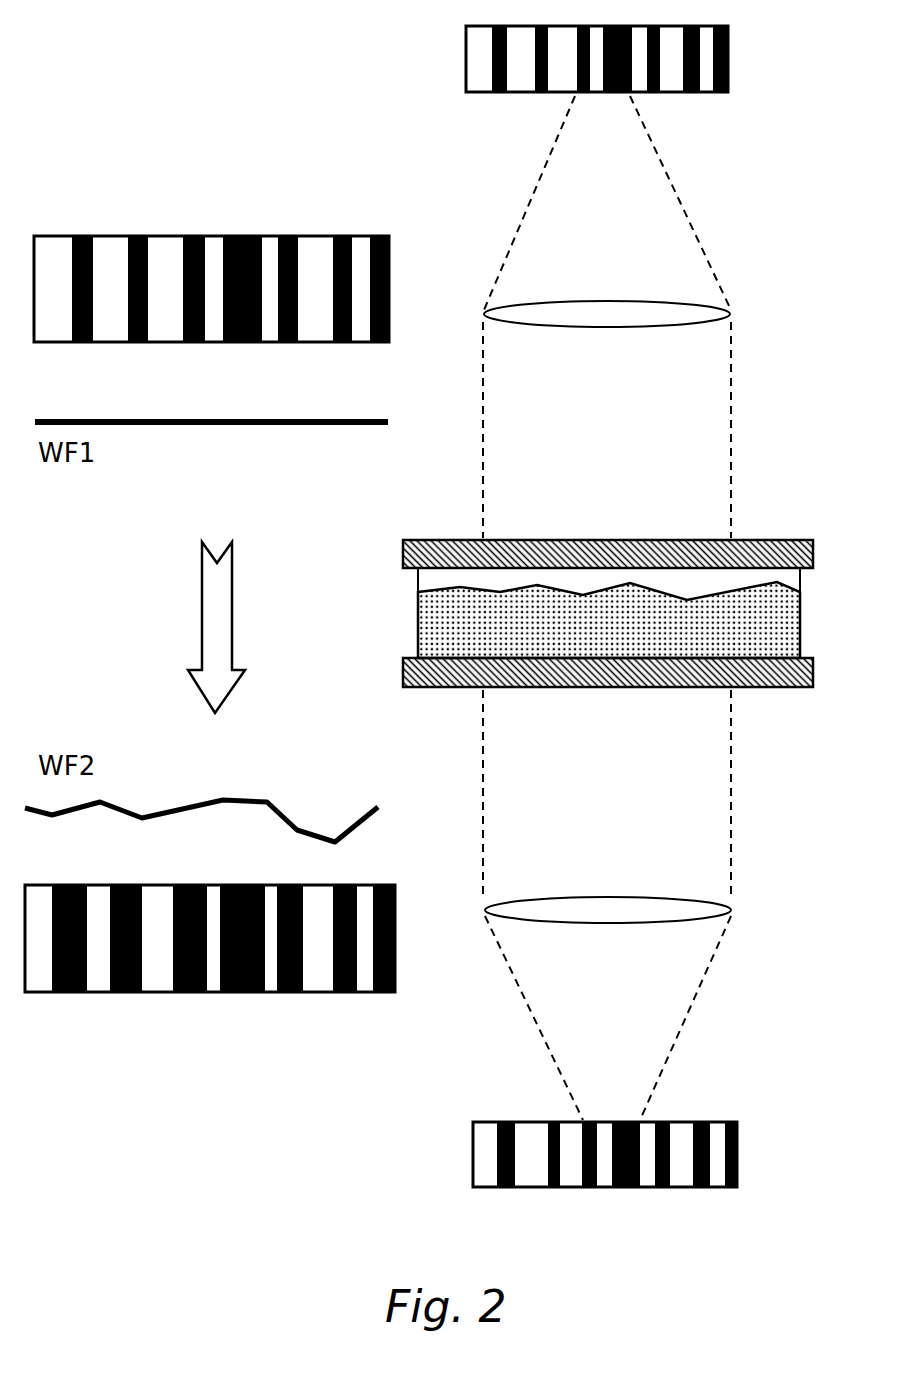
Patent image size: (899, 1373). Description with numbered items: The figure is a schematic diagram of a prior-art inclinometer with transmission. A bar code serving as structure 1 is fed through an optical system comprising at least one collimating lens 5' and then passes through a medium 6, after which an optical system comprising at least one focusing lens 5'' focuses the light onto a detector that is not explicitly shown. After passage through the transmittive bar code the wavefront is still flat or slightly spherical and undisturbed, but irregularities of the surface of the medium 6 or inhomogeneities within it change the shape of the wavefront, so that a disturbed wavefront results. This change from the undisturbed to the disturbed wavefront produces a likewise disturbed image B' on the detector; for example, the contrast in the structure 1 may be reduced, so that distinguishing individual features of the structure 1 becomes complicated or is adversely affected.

The structure 1 is at (381, 184).
The collimating lens 5' is at (643, 284).
The focusing lens 5'' is at (651, 876).
The medium 6 is at (573, 631).
The disturbed image B' is at (381, 1036).